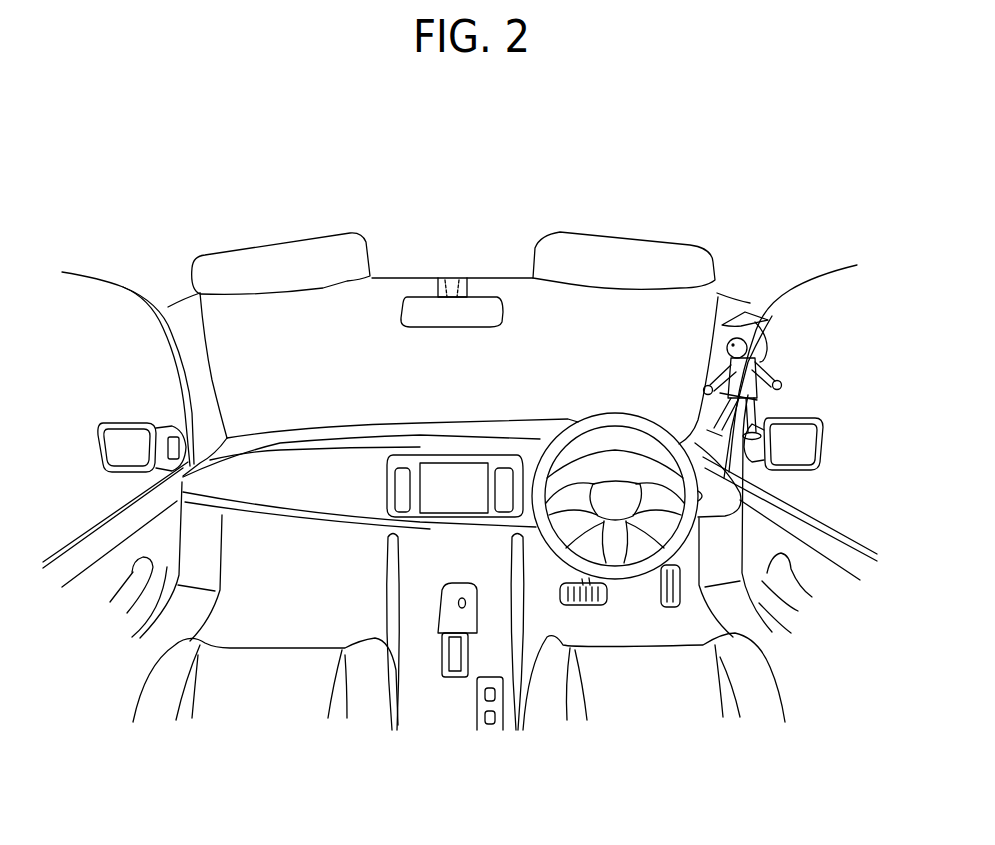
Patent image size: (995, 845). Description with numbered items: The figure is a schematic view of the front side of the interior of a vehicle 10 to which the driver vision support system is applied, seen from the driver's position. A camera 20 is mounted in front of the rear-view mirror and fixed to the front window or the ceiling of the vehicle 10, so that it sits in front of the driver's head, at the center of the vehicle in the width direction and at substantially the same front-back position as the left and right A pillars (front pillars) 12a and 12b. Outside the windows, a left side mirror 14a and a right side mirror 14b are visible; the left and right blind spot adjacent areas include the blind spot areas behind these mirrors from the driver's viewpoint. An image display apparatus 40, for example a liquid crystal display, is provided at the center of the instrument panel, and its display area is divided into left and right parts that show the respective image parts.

The vehicle 10 is at (674, 241).
The camera 20 is at (468, 285).
The left A pillar 12a is at (167, 378).
The right A pillar 12b is at (715, 352).
The left side mirror 14a is at (125, 420).
The right side mirror 14b is at (786, 415).
The image display apparatus 40 is at (457, 468).